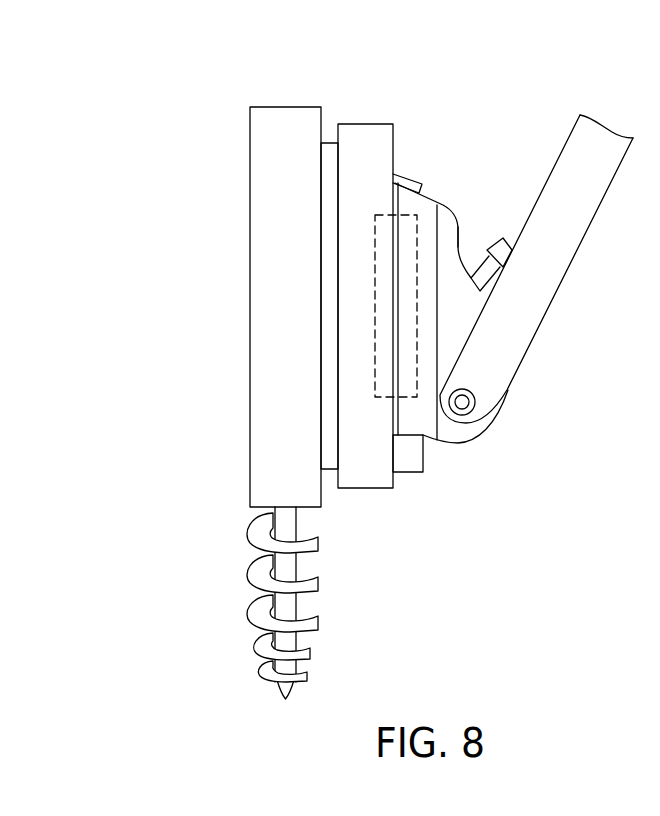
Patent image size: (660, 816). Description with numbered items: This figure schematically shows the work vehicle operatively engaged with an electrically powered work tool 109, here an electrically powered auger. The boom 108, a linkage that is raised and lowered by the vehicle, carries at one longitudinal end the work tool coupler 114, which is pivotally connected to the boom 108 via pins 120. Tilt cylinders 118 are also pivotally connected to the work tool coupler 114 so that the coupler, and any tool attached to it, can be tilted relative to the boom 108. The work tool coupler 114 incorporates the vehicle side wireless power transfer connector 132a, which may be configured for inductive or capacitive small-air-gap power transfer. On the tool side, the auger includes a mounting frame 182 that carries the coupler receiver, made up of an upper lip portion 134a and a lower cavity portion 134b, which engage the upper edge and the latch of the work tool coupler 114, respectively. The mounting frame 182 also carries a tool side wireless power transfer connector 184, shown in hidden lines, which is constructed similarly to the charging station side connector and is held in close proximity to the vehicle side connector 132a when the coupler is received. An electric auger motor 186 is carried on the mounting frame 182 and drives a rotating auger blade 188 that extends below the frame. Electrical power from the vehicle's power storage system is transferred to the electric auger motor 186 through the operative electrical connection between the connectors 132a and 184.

The boom 108 is at (538, 263).
The work tool 109 is at (237, 205).
The work tool coupler 114 is at (429, 187).
The tilt cylinders 118 is at (507, 240).
The pins 120 is at (474, 402).
The wireless power transfer connector 132a is at (450, 330).
The upper lip portion 134a is at (405, 176).
The lower cavity portion 134b is at (405, 452).
The mounting frame 182 is at (364, 132).
The tool side wireless power transfer connector 184 is at (450, 330).
The electric auger motor 186 is at (267, 281).
The auger blade 188 is at (263, 608).